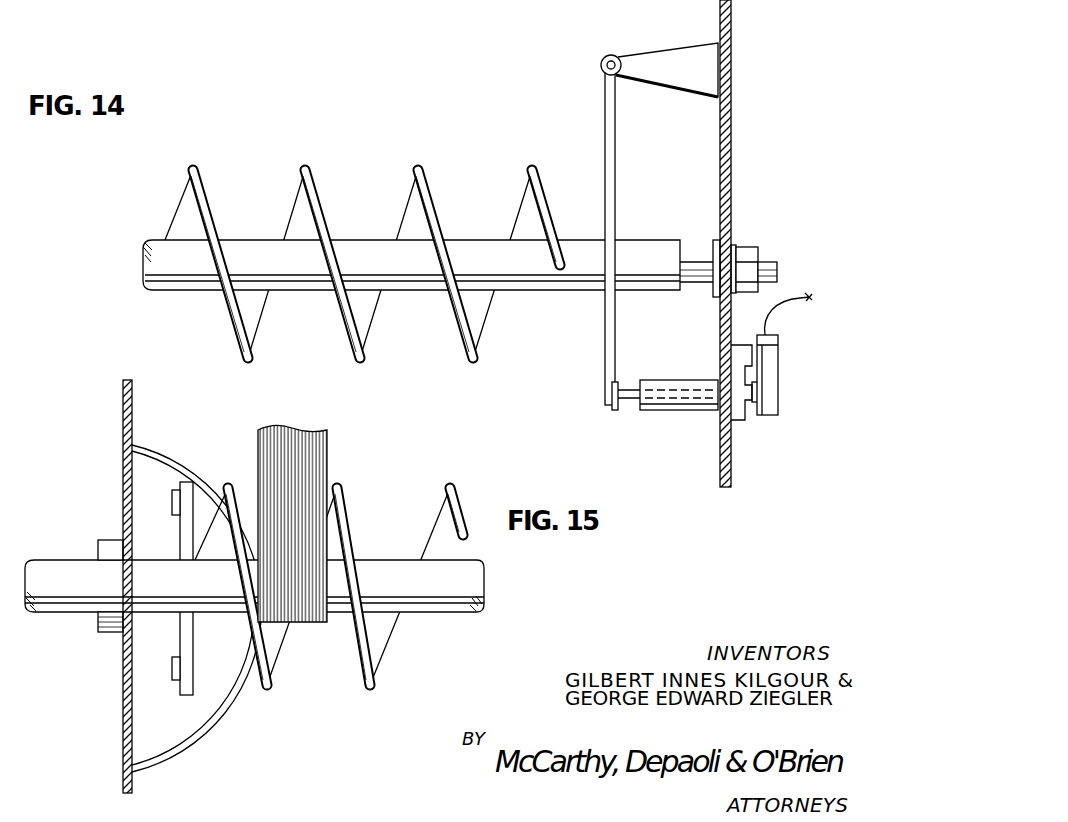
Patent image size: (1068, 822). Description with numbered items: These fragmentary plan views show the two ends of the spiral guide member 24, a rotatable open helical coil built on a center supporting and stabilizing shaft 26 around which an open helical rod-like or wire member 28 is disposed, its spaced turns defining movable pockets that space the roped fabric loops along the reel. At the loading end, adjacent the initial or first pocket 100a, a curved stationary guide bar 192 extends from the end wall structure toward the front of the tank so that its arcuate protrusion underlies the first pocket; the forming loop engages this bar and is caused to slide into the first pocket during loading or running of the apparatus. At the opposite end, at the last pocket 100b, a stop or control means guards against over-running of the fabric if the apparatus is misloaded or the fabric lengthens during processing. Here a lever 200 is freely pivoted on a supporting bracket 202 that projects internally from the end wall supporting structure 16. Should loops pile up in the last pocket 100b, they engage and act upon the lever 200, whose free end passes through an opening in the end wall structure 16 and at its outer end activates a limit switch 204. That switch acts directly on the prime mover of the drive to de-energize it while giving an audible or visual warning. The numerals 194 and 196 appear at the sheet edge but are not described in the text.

In FIG. 14, the end wall supporting structure 16 is at (734, 135).
In FIG. 15, the end wall supporting structure 16 is at (122, 422).
In FIG. 14, the spiral guide member 24 is at (203, 162).
In FIG. 15, the spiral guide member 24 is at (357, 497).
In FIG. 14, the center supporting and stabilizing shaft 26 is at (150, 238).
In FIG. 14, the open helical rod-like or wire member 28 is at (320, 190).
In FIG. 15, the initial or first pocket 100a is at (272, 633).
In FIG. 14, the last pocket 100b is at (495, 330).
In FIG. 15, the curved stationary guide bar 192 is at (152, 452).
In FIG. 14, the element 194 is at (247, 4).
In FIG. 14, the element 196 is at (451, 4).
In FIG. 14, the lever 200 is at (606, 137).
In FIG. 14, the supporting bracket 202 is at (643, 56).
In FIG. 14, the limit switch 204 is at (770, 397).